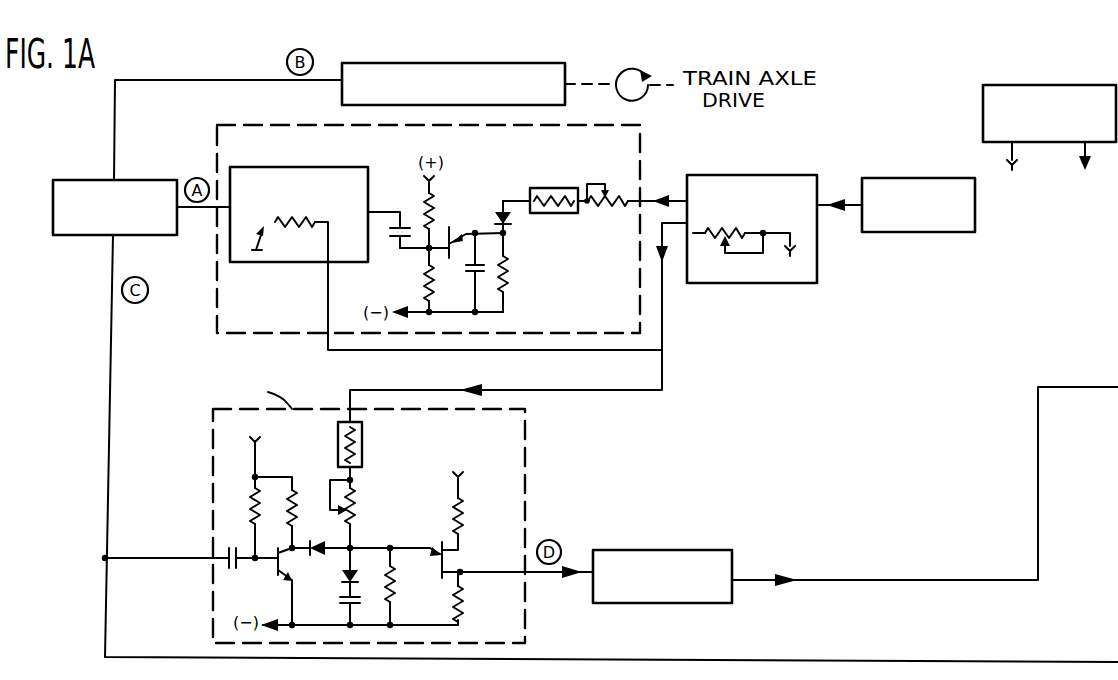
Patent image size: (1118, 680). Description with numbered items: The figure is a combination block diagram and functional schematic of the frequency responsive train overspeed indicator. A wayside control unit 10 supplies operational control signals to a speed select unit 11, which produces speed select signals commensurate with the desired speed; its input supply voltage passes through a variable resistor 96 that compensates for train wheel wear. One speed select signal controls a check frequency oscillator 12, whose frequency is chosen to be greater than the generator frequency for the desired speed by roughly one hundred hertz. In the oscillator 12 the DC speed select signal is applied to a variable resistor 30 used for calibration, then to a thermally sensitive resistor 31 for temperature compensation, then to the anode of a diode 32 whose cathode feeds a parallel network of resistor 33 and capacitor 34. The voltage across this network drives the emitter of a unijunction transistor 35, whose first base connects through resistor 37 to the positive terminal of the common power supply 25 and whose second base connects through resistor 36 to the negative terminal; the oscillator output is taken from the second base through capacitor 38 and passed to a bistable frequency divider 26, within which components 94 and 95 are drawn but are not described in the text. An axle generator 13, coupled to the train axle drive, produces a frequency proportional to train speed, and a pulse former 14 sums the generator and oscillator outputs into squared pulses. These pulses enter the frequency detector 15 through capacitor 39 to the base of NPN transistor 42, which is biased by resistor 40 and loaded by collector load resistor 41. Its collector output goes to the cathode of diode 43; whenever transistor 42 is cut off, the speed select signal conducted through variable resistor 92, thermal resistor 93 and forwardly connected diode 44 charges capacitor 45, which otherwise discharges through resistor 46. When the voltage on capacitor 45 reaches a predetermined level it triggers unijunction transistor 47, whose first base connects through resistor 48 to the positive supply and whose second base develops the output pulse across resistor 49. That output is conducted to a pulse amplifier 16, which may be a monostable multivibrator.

The wayside control unit 10 is at (898, 177).
The speed select unit 11 is at (775, 175).
The check frequency oscillator 12 is at (642, 149).
The axle generator 13 is at (525, 63).
The pulse former 14 is at (143, 180).
The frequency detector unit 15 is at (525, 432).
The pulse amplifier 16 is at (637, 550).
The common power supply 25 is at (1035, 85).
The frequency divider 26 is at (277, 167).
The variable resistor 30 is at (617, 207).
The thermally sensitive resistor 31 is at (552, 215).
The diode 32 is at (498, 211).
The resistor 33 is at (510, 282).
The capacitor 34 is at (469, 274).
The unijunction transistor 35 is at (451, 232).
The resistor 36 is at (424, 283).
The resistor 37 is at (426, 212).
The capacitor 38 is at (393, 245).
The capacitor 39 is at (229, 548).
The resistor 40 is at (250, 508).
The collector load resistor 41 is at (297, 506).
The NPN transistor 42 is at (276, 570).
The diode 43 is at (312, 542).
The diode 44 is at (344, 578).
The capacitor 45 is at (342, 600).
The resistor 46 is at (395, 588).
The unijunction transistor 47 is at (437, 549).
The resistor 48 is at (464, 519).
The resistor 49 is at (463, 600).
The variable resistor 92 is at (353, 517).
The thermal resistor 93 is at (362, 446).
The potentiometer wiper 94 is at (266, 240).
The potentiometer 95 is at (326, 222).
The variable resistor 96 is at (705, 239).